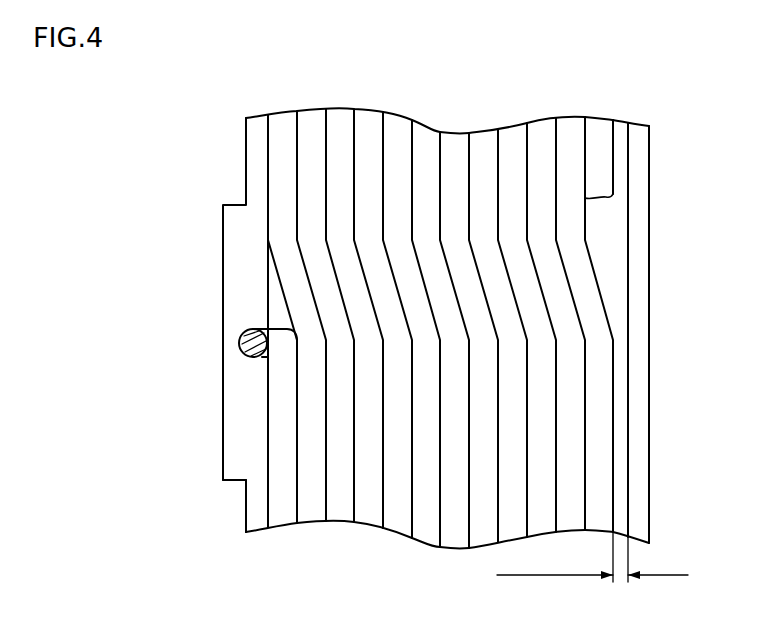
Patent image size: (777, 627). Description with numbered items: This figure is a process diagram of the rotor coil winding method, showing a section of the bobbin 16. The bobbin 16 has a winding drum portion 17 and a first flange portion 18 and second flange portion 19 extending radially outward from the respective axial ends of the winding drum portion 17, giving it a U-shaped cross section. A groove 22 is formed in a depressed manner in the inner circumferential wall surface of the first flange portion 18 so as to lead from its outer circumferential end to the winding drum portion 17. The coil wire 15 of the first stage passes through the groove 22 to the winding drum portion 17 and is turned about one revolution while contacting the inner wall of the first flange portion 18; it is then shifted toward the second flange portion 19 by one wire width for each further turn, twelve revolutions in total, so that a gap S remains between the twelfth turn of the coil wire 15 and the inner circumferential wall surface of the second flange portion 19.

The bobbin 16 is at (226, 154).
The winding drum portion 17 is at (600, 231).
The second flange portion 19 is at (637, 300).
The coil wire 15 is at (597, 477).
The groove 22 is at (240, 344).
The first flange portion 18 is at (257, 503).